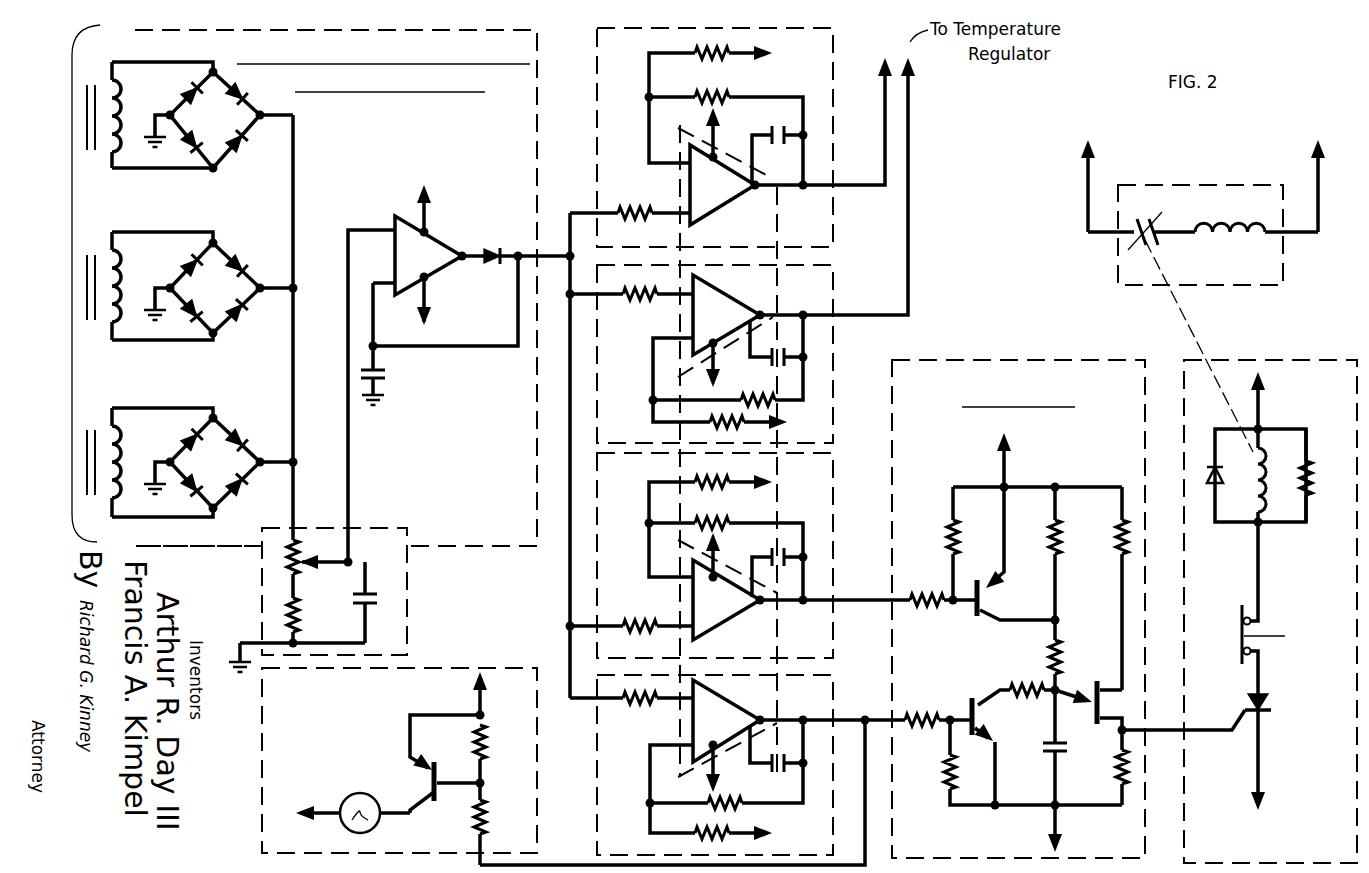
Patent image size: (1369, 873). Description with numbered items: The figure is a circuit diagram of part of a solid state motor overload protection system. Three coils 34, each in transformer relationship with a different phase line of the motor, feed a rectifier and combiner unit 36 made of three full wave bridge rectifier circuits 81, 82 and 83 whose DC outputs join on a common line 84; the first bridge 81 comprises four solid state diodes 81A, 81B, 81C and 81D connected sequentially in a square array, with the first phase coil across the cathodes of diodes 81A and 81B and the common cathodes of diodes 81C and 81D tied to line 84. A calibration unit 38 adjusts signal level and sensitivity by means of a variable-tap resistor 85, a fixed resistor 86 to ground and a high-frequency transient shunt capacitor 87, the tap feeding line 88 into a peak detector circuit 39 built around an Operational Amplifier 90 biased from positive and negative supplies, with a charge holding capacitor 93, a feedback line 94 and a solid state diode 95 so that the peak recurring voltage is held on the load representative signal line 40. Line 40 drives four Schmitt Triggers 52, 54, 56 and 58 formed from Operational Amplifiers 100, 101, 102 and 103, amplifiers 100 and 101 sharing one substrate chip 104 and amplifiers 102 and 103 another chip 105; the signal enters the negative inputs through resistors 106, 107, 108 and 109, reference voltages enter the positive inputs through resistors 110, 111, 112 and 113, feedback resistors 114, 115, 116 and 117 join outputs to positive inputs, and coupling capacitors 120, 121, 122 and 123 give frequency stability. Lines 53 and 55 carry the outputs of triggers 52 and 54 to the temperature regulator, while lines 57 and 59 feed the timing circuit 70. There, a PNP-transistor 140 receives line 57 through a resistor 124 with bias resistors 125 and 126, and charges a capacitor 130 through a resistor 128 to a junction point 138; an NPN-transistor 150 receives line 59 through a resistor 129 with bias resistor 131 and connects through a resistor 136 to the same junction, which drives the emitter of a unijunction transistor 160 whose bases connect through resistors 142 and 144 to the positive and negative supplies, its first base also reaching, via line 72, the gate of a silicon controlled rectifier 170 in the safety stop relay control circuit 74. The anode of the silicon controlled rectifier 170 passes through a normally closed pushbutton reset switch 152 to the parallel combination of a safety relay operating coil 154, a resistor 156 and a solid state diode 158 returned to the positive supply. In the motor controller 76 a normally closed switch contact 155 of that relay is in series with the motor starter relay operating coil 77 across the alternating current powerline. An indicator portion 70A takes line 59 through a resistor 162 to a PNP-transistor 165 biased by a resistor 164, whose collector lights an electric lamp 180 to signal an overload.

The coils 34 is at (72, 290).
The rectifier and combiner unit 36 is at (537, 63).
The calibration unit 38 is at (407, 592).
The peak detector circuit 39 is at (465, 282).
The load representative signal line 40 is at (570, 240).
The Schmitt Trigger 52 is at (833, 75).
The line 53 is at (855, 185).
The Schmitt Trigger 54 is at (833, 395).
The line 55 is at (862, 315).
The Schmitt Trigger 56 is at (833, 512).
The line 57 is at (866, 600).
The Schmitt Trigger 58 is at (833, 808).
The line 59 is at (846, 716).
The timing circuit 70 is at (1003, 360).
The indicator portion 70A is at (432, 668).
The line 72 is at (1160, 742).
The safety stop relay control circuit 74 is at (1248, 360).
The motor controller 76 is at (1118, 270).
The motor starter relay operating coil 77 is at (1228, 243).
The full wave bridge rectifier circuit 81 is at (202, 131).
The solid state diode 81A is at (174, 93).
The solid state diode 81B is at (192, 147).
The solid state diode 81C is at (251, 88).
The solid state diode 81D is at (252, 146).
The full wave bridge rectifier circuit 82 is at (223, 300).
The full wave bridge rectifier circuit 83 is at (223, 474).
The line 84 is at (293, 182).
The variable-tap resistor 85 is at (307, 569).
The fixed resistor 86 is at (282, 620).
The high-frequency transient shunt capacitor 87 is at (347, 602).
The electrical conduction line 88 is at (348, 280).
The Operational Amplifier 90 is at (437, 262).
The charge holding capacitor 93 is at (384, 374).
The feedback line 94 is at (468, 346).
The solid state diode 95 is at (514, 245).
The Operational Amplifier 100 is at (716, 165).
The Operational Amplifier 101 is at (718, 335).
The Operational Amplifier 102 is at (726, 586).
The Operational Amplifier 103 is at (726, 739).
The substrate chip 104 is at (785, 250).
The substrate chip 105 is at (777, 660).
The resistor 106 is at (630, 200).
The resistor 107 is at (631, 305).
The resistor 108 is at (631, 614).
The resistor 109 is at (631, 709).
The resistor 110 is at (727, 97).
The resistor 111 is at (712, 424).
The resistor 112 is at (727, 518).
The resistor 113 is at (702, 830).
The feedback resistor 114 is at (724, 129).
The feedback resistor 115 is at (726, 360).
The feedback resistor 116 is at (724, 550).
The feedback resistor 117 is at (724, 806).
The coupling capacitor 120 is at (780, 145).
The coupling capacitor 121 is at (779, 343).
The coupling capacitor 122 is at (780, 562).
The coupling capacitor 123 is at (779, 748).
The resistor 124 is at (942, 613).
The bias resistor 125 is at (936, 546).
The bias resistor 126 is at (1038, 553).
The resistor 128 is at (1060, 660).
The resistor 129 is at (937, 707).
The capacitor 130 is at (1037, 750).
The bias resistor 131 is at (1017, 762).
The resistor 136 is at (1016, 685).
The junction point 138 is at (1068, 690).
The PNP-transistor 140 is at (1018, 556).
The current limiting and temperature compensating resistor 142 is at (1104, 588).
The resistor 144 is at (1104, 767).
The NPN-transistor 150 is at (993, 754).
The pushbutton reset switch 152 is at (1269, 608).
The safety relay operating coil 154 is at (1262, 495).
The switch contact 155 is at (1170, 324).
The resistor 156 is at (1322, 475).
The solid state diode 158 is at (1210, 492).
The unijunction transistor 160 is at (1116, 708).
The resistor 162 is at (498, 822).
The bias establishing resistor 164 is at (498, 756).
The PNP-transistor 165 is at (439, 764).
The silicon controlled rectifier 170 is at (1273, 764).
The electric lamp 180 is at (377, 828).